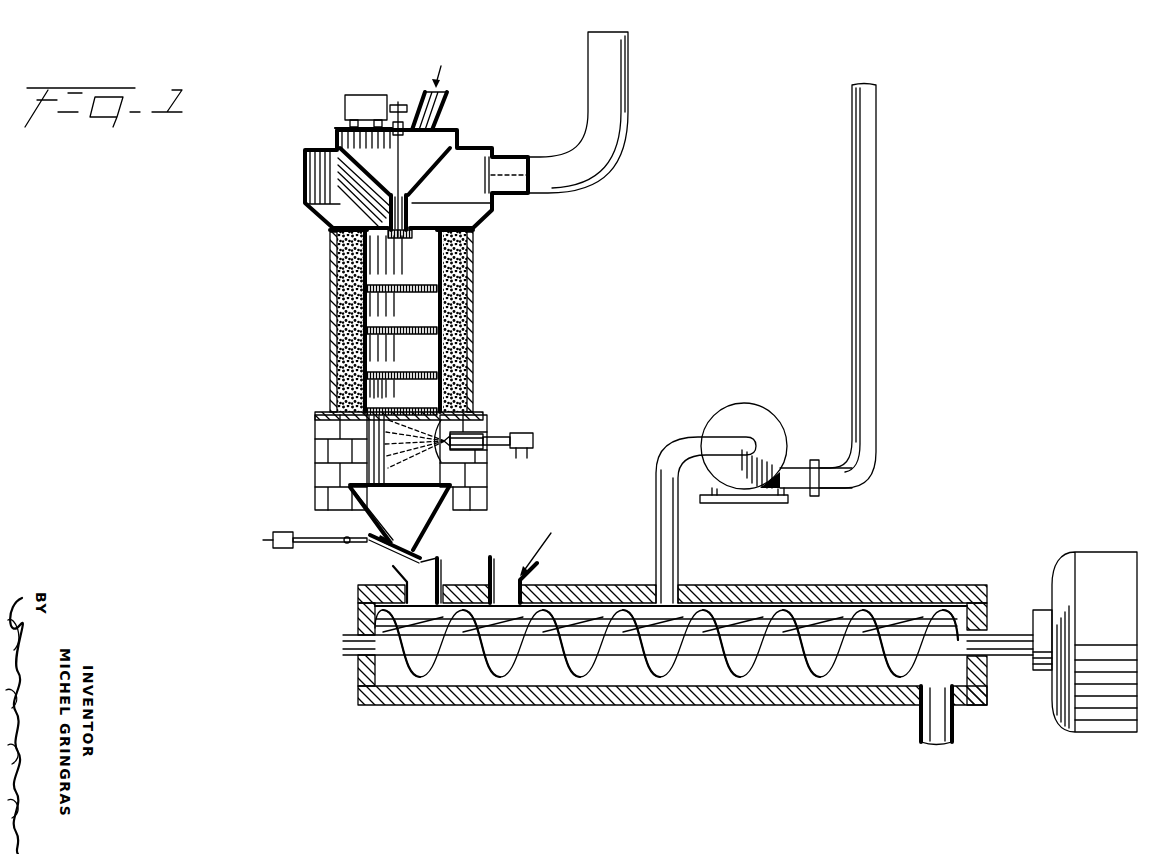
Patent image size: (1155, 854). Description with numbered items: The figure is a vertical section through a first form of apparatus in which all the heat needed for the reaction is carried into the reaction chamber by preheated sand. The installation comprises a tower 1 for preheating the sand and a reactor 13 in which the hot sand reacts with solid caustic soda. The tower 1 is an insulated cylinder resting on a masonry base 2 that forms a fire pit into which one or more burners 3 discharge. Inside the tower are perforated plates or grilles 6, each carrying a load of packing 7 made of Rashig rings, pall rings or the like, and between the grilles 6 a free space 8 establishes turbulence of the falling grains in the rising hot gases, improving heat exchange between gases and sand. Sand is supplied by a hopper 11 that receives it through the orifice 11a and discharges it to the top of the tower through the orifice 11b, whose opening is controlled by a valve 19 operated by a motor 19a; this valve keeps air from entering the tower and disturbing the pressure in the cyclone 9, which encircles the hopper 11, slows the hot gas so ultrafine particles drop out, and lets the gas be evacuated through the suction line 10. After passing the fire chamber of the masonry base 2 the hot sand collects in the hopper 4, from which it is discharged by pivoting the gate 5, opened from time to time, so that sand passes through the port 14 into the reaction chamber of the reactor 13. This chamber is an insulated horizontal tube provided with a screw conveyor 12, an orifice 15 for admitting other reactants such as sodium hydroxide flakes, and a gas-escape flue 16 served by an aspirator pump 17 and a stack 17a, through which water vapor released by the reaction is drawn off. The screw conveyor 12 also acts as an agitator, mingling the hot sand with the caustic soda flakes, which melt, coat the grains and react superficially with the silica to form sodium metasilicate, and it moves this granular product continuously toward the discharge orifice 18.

The tower 1 is at (472, 330).
The masonry base 2 is at (483, 418).
The burners 3 is at (492, 450).
The hopper 4 is at (368, 534).
The gate 5 is at (330, 542).
The perforated plates or grilles 6 is at (370, 333).
The packing 7 is at (368, 317).
The free space 8 is at (375, 383).
The cyclone 9 is at (302, 172).
The suction line 10 is at (590, 116).
The hopper 11 is at (355, 182).
The orifice 11a is at (447, 94).
The orifice 11b is at (388, 214).
The screw conveyor 12 is at (500, 672).
The reactor 13 is at (360, 600).
The port 14 is at (440, 568).
The orifice 15 is at (503, 558).
The gas-escape flue 16 is at (665, 566).
The aspirator pump 17 is at (755, 403).
The stack 17a is at (875, 208).
The discharge orifice 18 is at (920, 722).
The valve 19 is at (412, 240).
The motor 19a is at (352, 100).